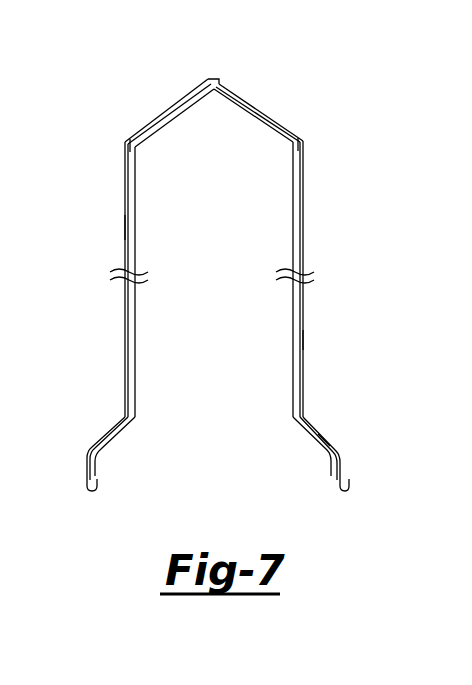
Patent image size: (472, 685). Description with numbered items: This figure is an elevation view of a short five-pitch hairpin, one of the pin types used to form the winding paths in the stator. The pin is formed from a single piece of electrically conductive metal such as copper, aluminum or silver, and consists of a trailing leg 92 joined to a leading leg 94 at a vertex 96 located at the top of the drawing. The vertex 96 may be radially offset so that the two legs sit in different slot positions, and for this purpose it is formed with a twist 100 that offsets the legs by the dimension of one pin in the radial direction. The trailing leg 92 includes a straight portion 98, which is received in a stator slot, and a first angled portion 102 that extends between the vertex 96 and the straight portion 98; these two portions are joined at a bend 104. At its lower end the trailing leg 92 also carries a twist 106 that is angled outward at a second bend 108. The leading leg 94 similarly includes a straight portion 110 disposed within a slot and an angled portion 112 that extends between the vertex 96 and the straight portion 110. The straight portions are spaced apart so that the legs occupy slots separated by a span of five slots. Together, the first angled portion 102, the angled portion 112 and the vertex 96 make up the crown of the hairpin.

The trailing leg 92 is at (305, 201).
The leading leg 94 is at (136, 203).
The vertex 96 is at (214, 78).
The straight portion 98 is at (305, 343).
The twist 100 is at (205, 79).
The first angled portion 102 is at (250, 101).
The bend 104 is at (303, 143).
The twist 106 is at (327, 433).
The second bend 108 is at (290, 423).
The straight portion 110 is at (122, 227).
The angled portion 112 is at (152, 112).